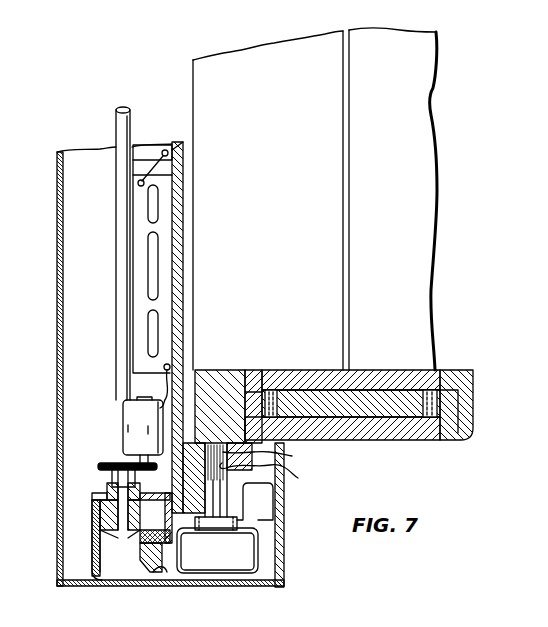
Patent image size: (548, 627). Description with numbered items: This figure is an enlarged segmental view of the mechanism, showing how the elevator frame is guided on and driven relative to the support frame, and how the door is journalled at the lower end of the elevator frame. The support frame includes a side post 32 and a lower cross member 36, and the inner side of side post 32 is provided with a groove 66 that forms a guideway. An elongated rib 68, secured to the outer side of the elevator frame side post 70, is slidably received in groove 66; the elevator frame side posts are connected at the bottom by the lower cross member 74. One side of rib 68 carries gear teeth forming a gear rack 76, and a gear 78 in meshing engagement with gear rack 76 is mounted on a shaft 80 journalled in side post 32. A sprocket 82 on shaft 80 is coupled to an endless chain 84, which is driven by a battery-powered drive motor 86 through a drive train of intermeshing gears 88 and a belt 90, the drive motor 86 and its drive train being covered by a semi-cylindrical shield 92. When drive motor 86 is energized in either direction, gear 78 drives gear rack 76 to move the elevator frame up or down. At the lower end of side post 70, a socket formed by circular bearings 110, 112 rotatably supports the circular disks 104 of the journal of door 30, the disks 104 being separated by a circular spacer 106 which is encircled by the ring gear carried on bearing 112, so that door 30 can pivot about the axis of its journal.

The door 30 is at (413, 43).
The lower cross member 74 is at (193, 78).
The lower cross member 36 is at (183, 268).
The side post 70 is at (240, 446).
The elongated rib 68 is at (243, 392).
The circular disk 104 is at (422, 373).
The circular spacer 106 is at (387, 402).
The circular bearing 110 is at (473, 372).
The circular bearing 112 is at (452, 441).
The gear 78 is at (268, 458).
The gear rack 76 is at (272, 476).
The groove 66 is at (243, 470).
The side post 32 is at (285, 501).
The endless chain 84 is at (250, 519).
The sprocket 82 is at (223, 518).
The shaft 80 is at (223, 518).
The intermeshing gears 88 is at (138, 530).
The drive motor 86 is at (130, 423).
The belt 90 is at (112, 465).
The semi-cylindrical shield 92 is at (57, 460).